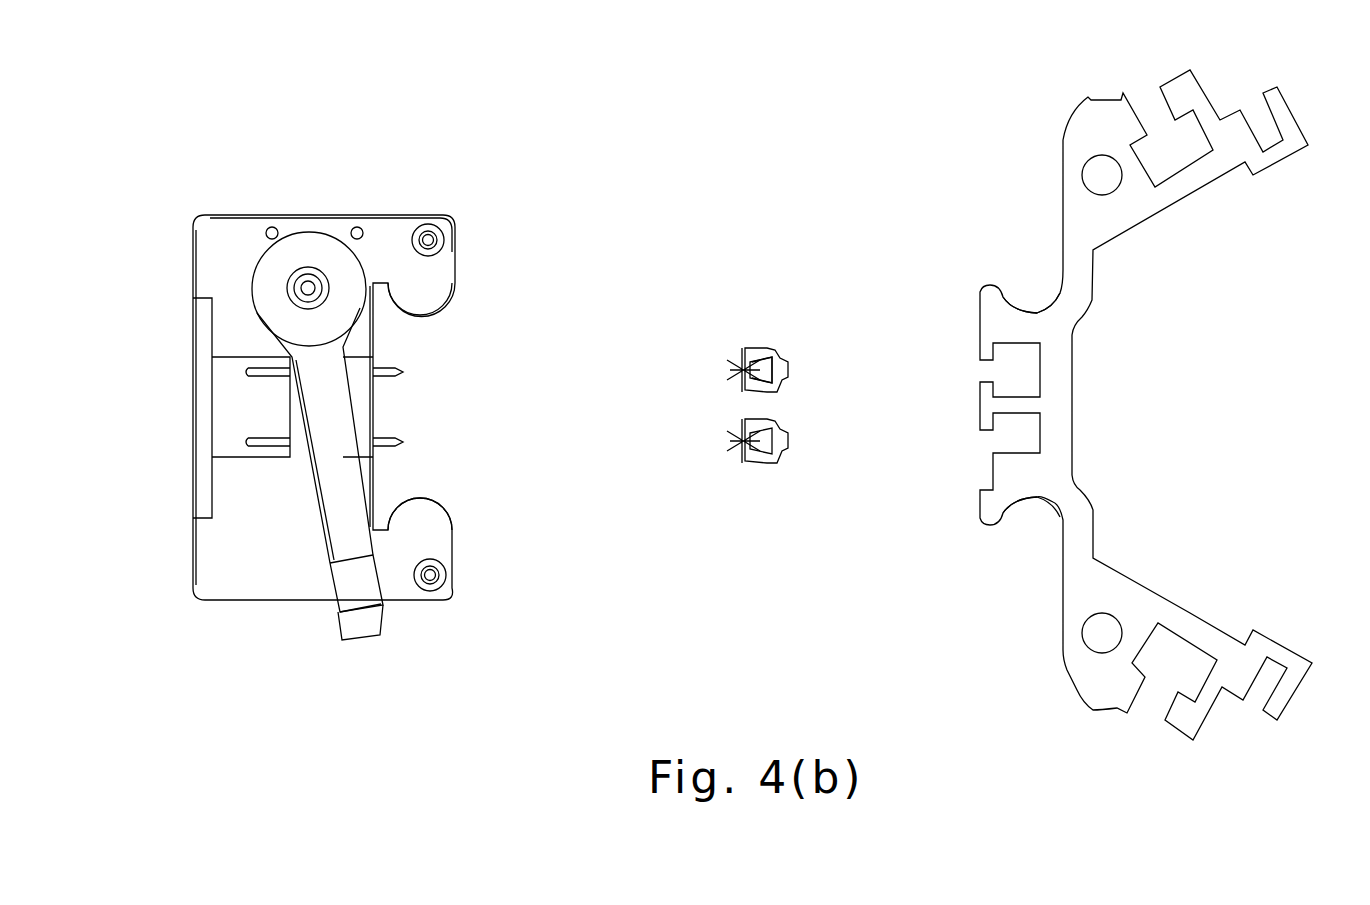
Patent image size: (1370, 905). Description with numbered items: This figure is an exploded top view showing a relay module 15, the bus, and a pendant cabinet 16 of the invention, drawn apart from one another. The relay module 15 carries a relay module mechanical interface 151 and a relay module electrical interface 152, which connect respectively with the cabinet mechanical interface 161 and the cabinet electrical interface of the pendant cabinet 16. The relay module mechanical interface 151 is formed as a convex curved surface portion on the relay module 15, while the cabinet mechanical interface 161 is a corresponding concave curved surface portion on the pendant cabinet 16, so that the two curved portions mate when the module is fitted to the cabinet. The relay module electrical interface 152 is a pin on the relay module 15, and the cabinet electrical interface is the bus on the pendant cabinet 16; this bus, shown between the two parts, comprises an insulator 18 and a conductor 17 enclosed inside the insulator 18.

The relay module 15 is at (453, 255).
The relay module mechanical interface 151 is at (435, 308).
The relay module electrical interface 152 is at (405, 372).
The pendant cabinet 16 is at (1080, 440).
The cabinet mechanical interface 161 is at (1042, 308).
The conductor 17 is at (752, 343).
The insulator 18 is at (782, 345).